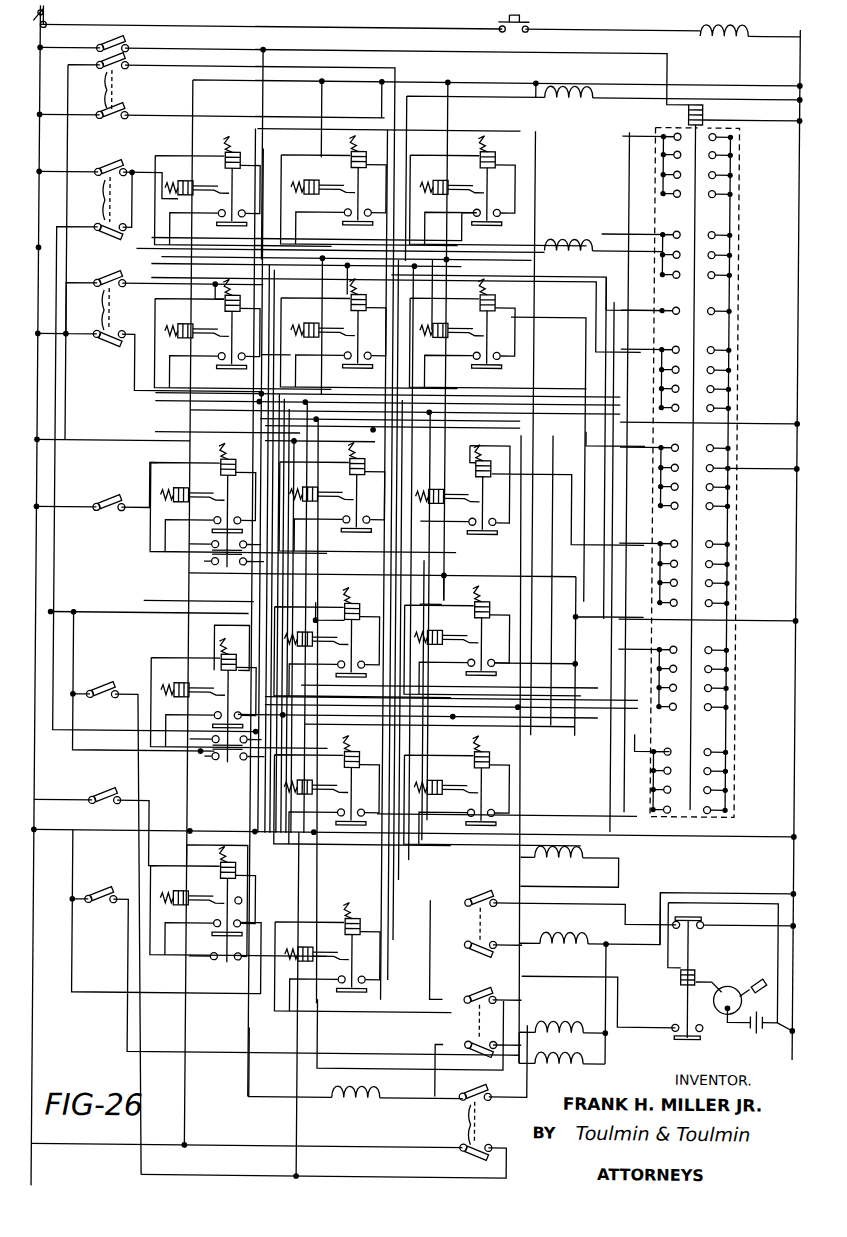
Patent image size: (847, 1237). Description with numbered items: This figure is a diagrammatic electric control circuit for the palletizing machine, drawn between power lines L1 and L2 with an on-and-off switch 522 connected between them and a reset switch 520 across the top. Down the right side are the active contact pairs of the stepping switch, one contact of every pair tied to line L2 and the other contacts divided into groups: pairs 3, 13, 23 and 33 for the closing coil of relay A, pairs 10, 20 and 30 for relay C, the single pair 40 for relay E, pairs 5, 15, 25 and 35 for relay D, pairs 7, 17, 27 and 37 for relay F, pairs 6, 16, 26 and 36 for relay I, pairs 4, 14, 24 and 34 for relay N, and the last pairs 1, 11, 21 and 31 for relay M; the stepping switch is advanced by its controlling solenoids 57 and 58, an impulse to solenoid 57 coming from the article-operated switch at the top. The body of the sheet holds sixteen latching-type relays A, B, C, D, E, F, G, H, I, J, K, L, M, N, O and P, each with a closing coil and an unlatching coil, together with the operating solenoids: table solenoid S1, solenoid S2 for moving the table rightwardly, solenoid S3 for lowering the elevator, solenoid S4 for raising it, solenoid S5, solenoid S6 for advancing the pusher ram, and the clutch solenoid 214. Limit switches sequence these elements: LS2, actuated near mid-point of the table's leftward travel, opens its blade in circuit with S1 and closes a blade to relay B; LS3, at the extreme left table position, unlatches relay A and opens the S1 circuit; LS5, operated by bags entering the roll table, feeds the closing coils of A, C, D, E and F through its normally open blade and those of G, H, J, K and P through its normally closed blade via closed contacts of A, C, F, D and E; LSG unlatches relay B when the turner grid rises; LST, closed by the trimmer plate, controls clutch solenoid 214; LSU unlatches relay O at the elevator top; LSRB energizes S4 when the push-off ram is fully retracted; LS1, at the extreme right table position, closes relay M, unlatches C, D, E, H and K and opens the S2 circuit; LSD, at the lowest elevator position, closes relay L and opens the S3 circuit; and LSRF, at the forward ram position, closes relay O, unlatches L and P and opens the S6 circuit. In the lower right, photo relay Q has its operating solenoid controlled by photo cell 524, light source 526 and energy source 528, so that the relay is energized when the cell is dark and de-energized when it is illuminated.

The on-and-off switch 522 is at (44, 16).
The reset switch 520 is at (495, 15).
The stepping switch controlling solenoid 58 is at (724, 41).
The stepping switch controlling solenoid 57 is at (697, 97).
The power line L1 is at (40, 68).
The power line L2 is at (797, 55).
The table solenoid S1 is at (582, 241).
The table solenoid S2 is at (558, 936).
The elevator solenoid S3 is at (567, 850).
The elevator solenoid S4 is at (564, 1057).
The operating solenoid S5 is at (575, 90).
The pusher ram solenoid S6 is at (366, 1092).
The clutch solenoid 214 is at (549, 1026).
The photo cell 524 is at (728, 983).
The light source 526 is at (753, 983).
The energy source 528 is at (780, 1023).
The photo relay Q is at (685, 975).
The limit switch LS2 is at (99, 77).
The limit switch LS3 is at (99, 199).
The limit switch LS5 is at (96, 308).
The limit switch LSG is at (106, 513).
The limit switch LST is at (102, 701).
The limit switch LSU is at (103, 807).
The limit switch LSRB is at (104, 886).
The limit switch LS1 is at (467, 924).
The limit switch LSD is at (465, 1022).
The limit switch LSRF is at (456, 1122).
The latching relay A is at (244, 191).
The latching relay B is at (370, 190).
The latching relay C is at (499, 190).
The latching relay D is at (243, 334).
The latching relay E is at (369, 333).
The latching relay F is at (498, 333).
The latching relay G is at (239, 506).
The latching relay H is at (368, 497).
The latching relay I is at (530, 494).
The latching relay J is at (239, 694).
The latching relay K is at (363, 642).
The latching relay L is at (493, 640).
The latching relay M is at (363, 790).
The latching relay N is at (493, 790).
The latching relay O is at (239, 904).
The latching relay P is at (363, 957).
The stepping switch contact pair 1 is at (716, 746).
The stepping switch contact pair 3 is at (721, 131).
The stepping switch contact pair 4 is at (717, 644).
The stepping switch contact pair 5 is at (719, 344).
The stepping switch contact pair 6 is at (718, 538).
The stepping switch contact pair 7 is at (718, 442).
The stepping switch contact pair 10 is at (720, 229).
The stepping switch contact pair 11 is at (716, 765).
The stepping switch contact pair 13 is at (721, 149).
The stepping switch contact pair 14 is at (717, 663).
The stepping switch contact pair 15 is at (719, 364).
The stepping switch contact pair 16 is at (718, 558).
The stepping switch contact pair 17 is at (718, 462).
The stepping switch contact pair 20 is at (720, 249).
The stepping switch contact pair 21 is at (716, 784).
The stepping switch contact pair 23 is at (721, 169).
The stepping switch contact pair 24 is at (717, 682).
The stepping switch contact pair 25 is at (719, 383).
The stepping switch contact pair 26 is at (717, 577).
The stepping switch contact pair 27 is at (718, 481).
The stepping switch contact pair 30 is at (720, 269).
The stepping switch contact pair 31 is at (716, 804).
The stepping switch contact pair 33 is at (720, 188).
The stepping switch contact pair 34 is at (716, 701).
The stepping switch contact pair 35 is at (719, 402).
The stepping switch contact pair 36 is at (717, 597).
The stepping switch contact pair 37 is at (718, 500).
The stepping switch contact pair 40 is at (720, 305).